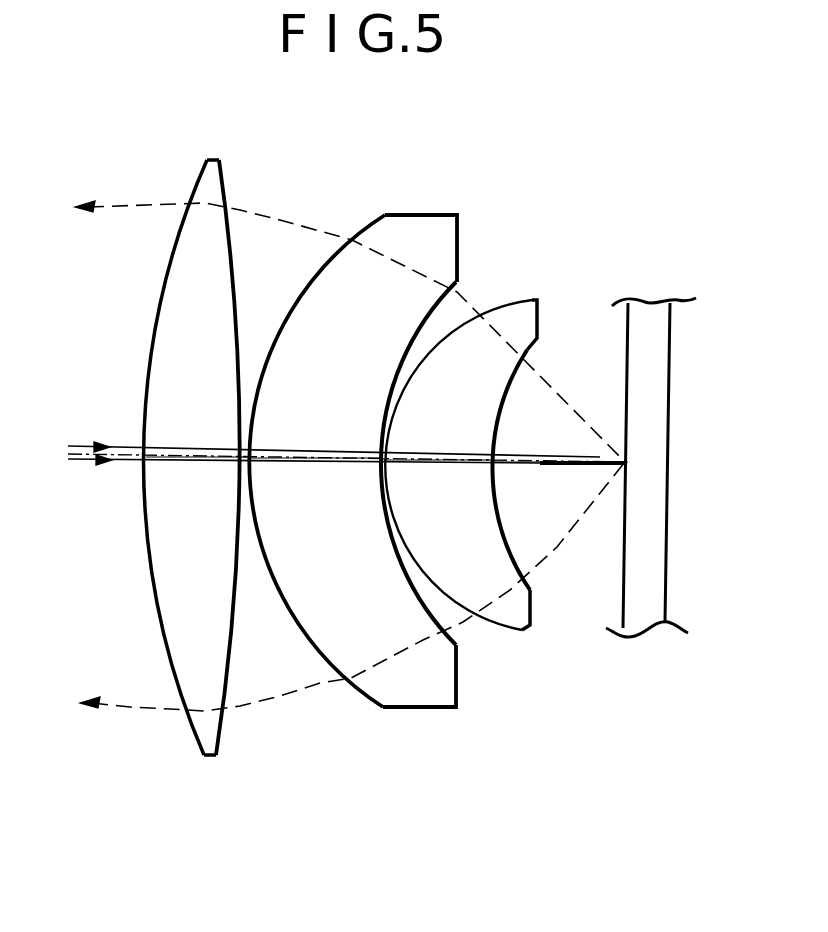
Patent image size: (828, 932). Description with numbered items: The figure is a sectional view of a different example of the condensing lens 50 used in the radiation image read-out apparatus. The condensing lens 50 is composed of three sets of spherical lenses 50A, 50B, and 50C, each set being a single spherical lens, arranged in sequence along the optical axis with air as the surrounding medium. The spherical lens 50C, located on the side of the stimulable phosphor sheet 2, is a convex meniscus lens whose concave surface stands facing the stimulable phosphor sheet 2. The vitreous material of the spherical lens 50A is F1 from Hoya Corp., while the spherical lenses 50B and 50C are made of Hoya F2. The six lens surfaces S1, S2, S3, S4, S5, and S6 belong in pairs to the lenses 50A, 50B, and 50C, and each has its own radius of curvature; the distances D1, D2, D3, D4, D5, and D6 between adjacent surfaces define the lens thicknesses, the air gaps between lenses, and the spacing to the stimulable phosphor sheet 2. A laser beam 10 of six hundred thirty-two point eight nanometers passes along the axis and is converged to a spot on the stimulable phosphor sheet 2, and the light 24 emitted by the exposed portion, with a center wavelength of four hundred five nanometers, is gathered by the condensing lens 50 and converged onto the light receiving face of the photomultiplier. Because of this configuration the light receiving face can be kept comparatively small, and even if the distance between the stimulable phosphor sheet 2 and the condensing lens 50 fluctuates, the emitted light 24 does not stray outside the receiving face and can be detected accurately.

The stimulable phosphor sheet 2 is at (656, 408).
The laser beam 10 is at (82, 464).
The light emitted by the stimulable phosphor sheet 24 is at (128, 202).
The condensing lens 50 is at (400, 160).
The spherical lens 50A is at (219, 180).
The spherical lens 50B is at (432, 232).
The spherical lens 50C is at (524, 305).
The surface S1 is at (192, 720).
The surface S2 is at (222, 720).
The surface S3 is at (350, 690).
The surface S4 is at (450, 620).
The surface S5 is at (524, 634).
The surface S6 is at (531, 584).
The distance between adjacent surfaces D1 is at (172, 456).
The distance between adjacent surfaces D2 is at (242, 455).
The distance between adjacent surfaces D3 is at (310, 458).
The distance between adjacent surfaces D4 is at (380, 456).
The distance between adjacent surfaces D5 is at (428, 458).
The distance between adjacent surfaces D6 is at (536, 460).